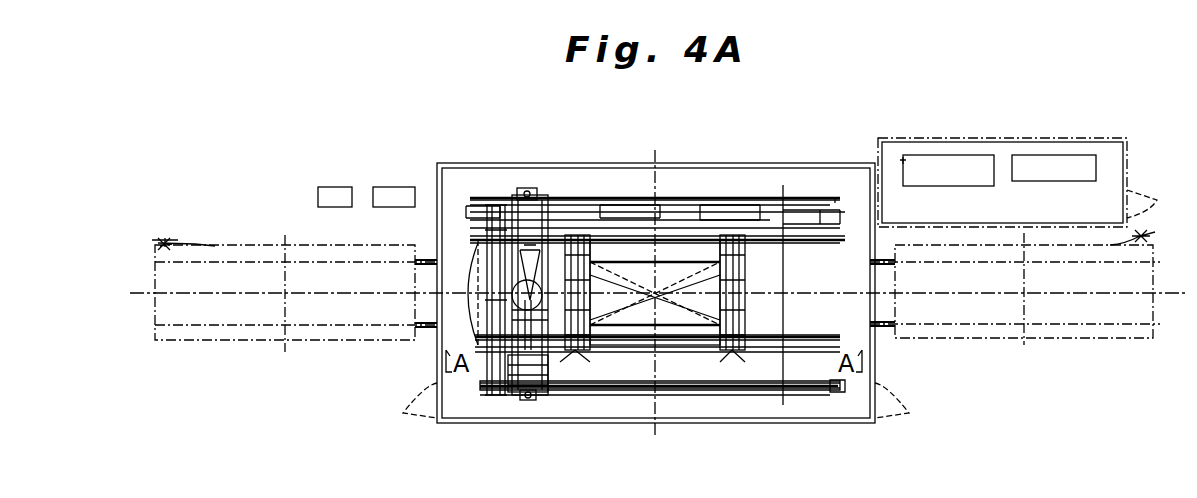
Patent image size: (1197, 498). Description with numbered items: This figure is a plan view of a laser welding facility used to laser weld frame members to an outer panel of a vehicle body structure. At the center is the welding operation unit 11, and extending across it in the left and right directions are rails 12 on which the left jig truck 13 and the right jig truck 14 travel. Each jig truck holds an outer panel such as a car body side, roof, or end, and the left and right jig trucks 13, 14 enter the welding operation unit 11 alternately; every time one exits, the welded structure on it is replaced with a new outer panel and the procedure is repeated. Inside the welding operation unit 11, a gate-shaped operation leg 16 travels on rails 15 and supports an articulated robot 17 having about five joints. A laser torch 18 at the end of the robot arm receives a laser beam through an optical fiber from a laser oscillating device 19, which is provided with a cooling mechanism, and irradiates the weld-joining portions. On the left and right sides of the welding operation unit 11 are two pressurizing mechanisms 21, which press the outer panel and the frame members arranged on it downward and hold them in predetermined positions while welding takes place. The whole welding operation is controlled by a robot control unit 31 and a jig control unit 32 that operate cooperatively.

The welding operation unit 11 is at (716, 159).
The rails 12 is at (456, 250).
The left jig truck 13 is at (356, 343).
The right jig truck 14 is at (990, 340).
The rails 15 is at (720, 391).
The gate-shaped operation leg 16 is at (552, 373).
The articulated robot 17 is at (662, 347).
The laser torch 18 is at (500, 392).
The laser oscillating device 19 is at (932, 156).
The pressurizing mechanisms 21 is at (598, 347).
The robot control unit 31 is at (388, 186).
The jig control unit 32 is at (340, 186).